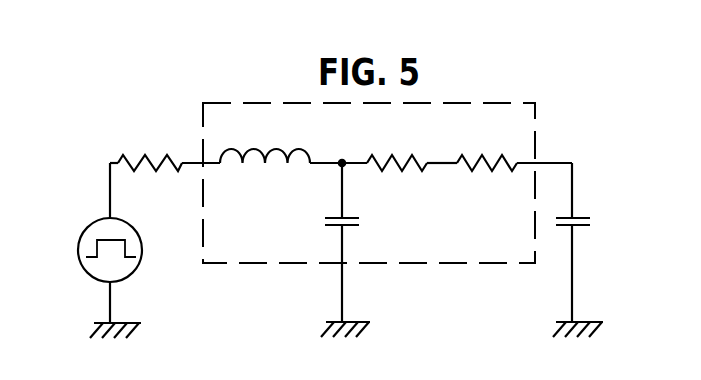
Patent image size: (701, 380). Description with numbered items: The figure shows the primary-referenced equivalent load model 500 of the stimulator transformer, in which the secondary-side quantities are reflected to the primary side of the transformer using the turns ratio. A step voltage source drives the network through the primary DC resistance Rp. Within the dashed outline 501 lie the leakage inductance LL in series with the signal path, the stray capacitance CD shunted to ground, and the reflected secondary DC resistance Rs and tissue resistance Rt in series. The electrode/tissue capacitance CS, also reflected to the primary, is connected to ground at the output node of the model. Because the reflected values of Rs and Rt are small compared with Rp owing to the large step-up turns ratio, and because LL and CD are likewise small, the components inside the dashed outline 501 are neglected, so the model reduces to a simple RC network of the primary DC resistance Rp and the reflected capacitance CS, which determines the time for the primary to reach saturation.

The primary-referenced equivalent load model 500 is at (586, 216).
The dashed outline 501 is at (387, 220).
The primary DC resistance Rp is at (165, 147).
The leakage inductance LL is at (293, 172).
The stray capacitance CD is at (355, 250).
The secondary DC resistance Rs is at (412, 148).
The tissue resistance Rt is at (514, 148).
The electrode/tissue capacitance CS is at (586, 250).